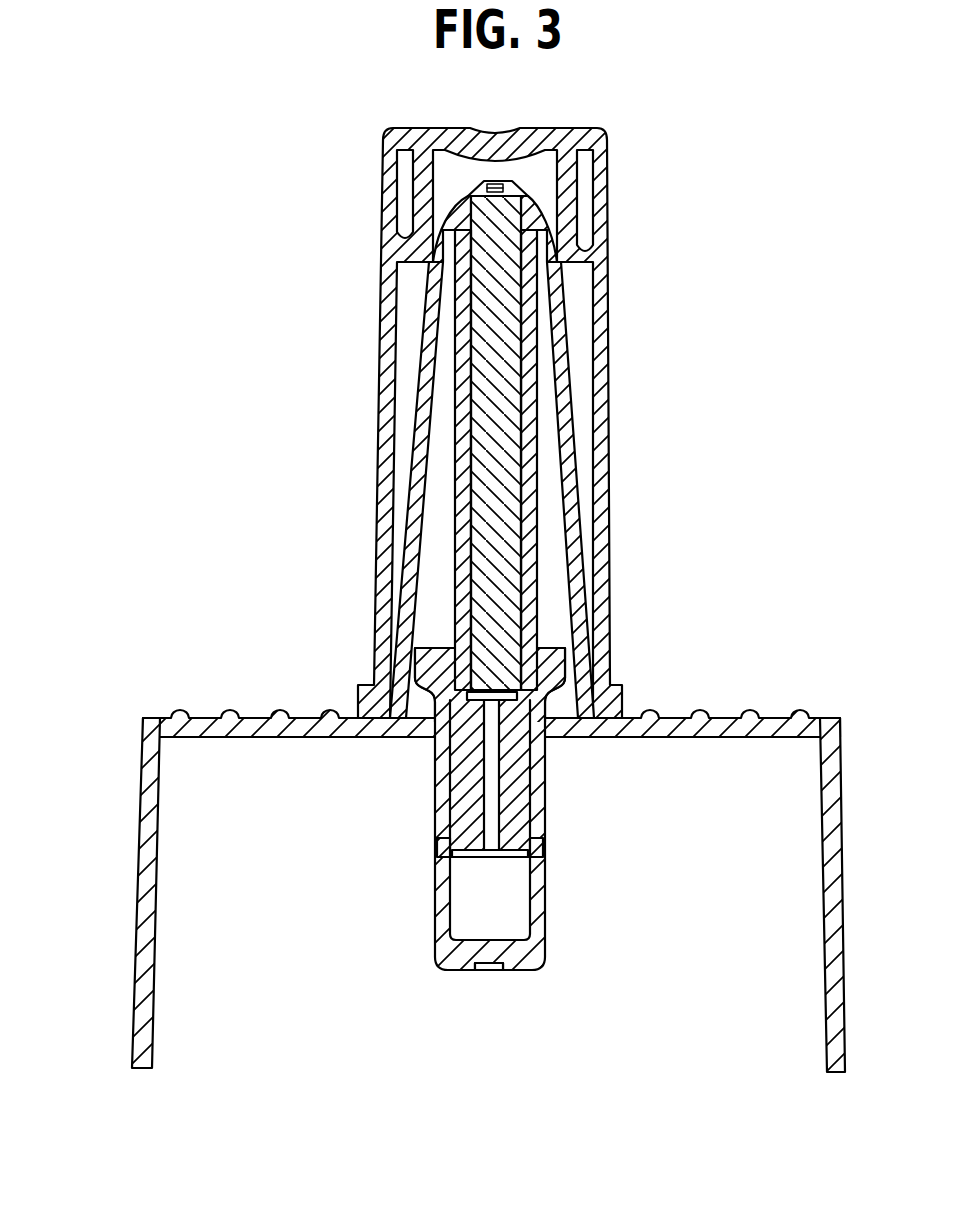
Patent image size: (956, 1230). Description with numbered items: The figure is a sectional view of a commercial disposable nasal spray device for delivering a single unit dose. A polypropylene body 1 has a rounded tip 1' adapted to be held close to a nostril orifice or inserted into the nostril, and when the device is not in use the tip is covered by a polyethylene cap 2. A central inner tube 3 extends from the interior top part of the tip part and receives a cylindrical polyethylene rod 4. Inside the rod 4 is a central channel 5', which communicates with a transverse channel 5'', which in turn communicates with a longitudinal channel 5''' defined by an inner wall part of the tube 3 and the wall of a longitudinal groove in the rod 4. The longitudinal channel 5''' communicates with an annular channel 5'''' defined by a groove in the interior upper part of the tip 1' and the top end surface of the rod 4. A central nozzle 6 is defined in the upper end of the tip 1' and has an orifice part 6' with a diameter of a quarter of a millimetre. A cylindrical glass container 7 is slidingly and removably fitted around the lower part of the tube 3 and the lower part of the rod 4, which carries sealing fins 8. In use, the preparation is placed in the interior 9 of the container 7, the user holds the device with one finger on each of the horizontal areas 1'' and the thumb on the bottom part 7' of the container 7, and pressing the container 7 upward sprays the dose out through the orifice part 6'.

The body 1 is at (447, 895).
The rounded tip 1' is at (537, 490).
The horizontal areas 1'' is at (491, 682).
The cap 2 is at (604, 160).
The central inner tube 3 is at (458, 549).
The cylindrical rod 4 is at (512, 460).
The central channel 5' is at (544, 774).
The transverse channel 5'' is at (552, 677).
The longitudinal channel 5''' is at (410, 460).
The annular channel 5'''' is at (504, 226).
The central nozzle 6 is at (414, 167).
The orifice part 6' is at (459, 137).
The cylindrical glass container 7 is at (465, 809).
The bottom part 7' is at (434, 1004).
The sealing fins 8 is at (440, 834).
The interior 9 is at (512, 918).